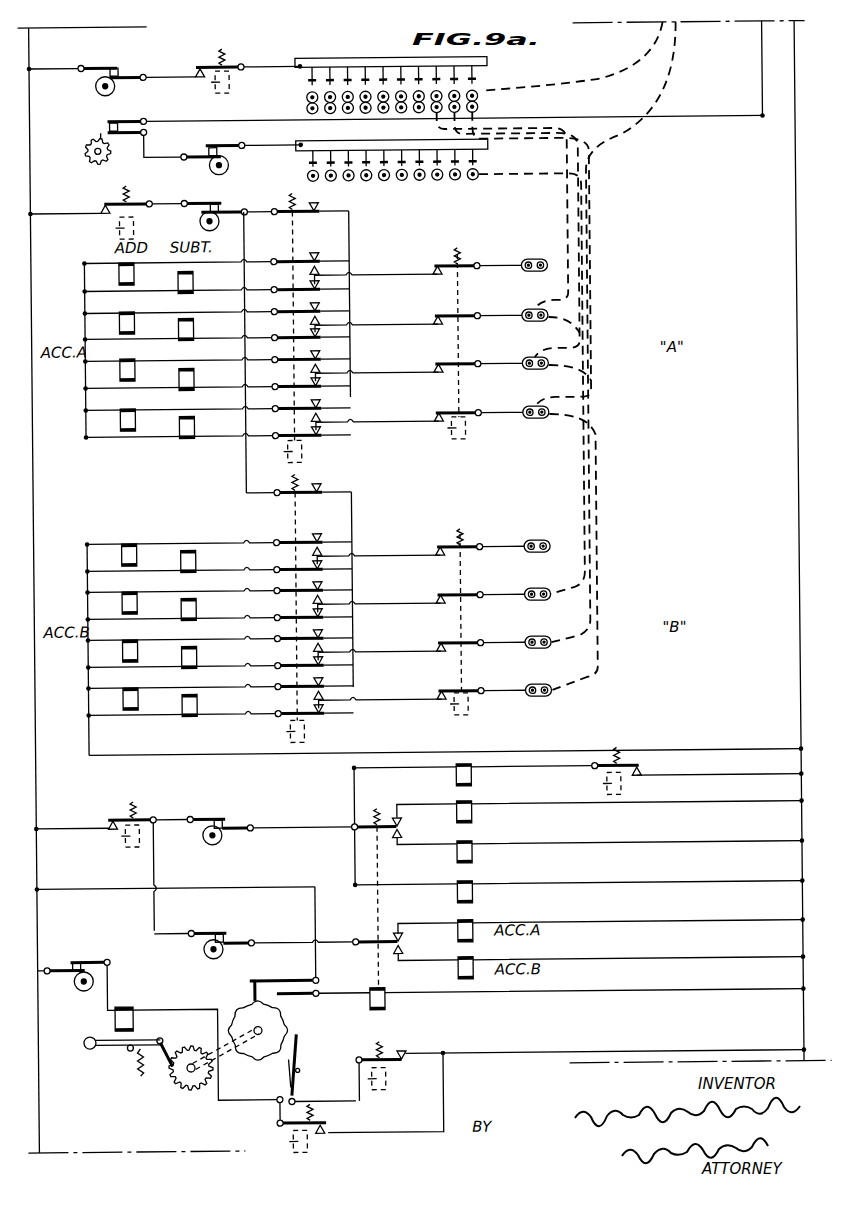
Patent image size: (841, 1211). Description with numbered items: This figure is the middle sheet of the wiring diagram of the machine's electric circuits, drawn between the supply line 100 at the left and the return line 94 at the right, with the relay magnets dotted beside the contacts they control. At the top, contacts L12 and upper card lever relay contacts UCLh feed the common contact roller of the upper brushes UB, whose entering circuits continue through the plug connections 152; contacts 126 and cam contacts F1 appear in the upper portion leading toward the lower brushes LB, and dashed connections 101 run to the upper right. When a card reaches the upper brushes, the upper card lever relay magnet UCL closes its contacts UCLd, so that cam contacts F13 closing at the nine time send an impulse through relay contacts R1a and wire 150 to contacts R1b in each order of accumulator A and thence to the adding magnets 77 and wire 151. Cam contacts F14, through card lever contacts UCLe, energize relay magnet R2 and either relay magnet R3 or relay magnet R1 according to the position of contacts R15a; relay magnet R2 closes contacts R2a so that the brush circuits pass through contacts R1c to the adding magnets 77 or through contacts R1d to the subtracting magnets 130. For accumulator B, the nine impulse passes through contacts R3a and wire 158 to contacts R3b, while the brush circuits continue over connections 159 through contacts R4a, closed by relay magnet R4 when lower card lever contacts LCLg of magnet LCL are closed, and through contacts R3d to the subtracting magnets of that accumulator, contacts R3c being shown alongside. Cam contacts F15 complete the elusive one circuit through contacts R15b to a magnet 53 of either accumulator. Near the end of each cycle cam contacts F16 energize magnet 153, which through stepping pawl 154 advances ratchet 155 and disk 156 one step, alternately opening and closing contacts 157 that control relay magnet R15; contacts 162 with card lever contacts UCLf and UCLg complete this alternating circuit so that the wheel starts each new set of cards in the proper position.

The line 100 is at (31, 52).
The line 94 is at (793, 62).
The contacts L12 is at (118, 67).
The card lever relay magnet contacts UCLh is at (198, 72).
The upper card lever relay magnet UCL is at (212, 84).
The upper brushes UB is at (380, 73).
The cable connections 101 is at (660, 92).
The cam operated contact 126 is at (106, 126).
The contact F1 is at (224, 146).
The lower brushes LB is at (380, 156).
The upper card lever relay contacts UCLd is at (100, 210).
The cam contacts F13 is at (222, 205).
The relay contacts R1a is at (318, 212).
The wire 150 is at (349, 240).
The relay contacts R1b is at (362, 410).
The contacts R1c is at (322, 276).
The contacts R1d is at (310, 286).
The adding magnets 77 is at (116, 327).
The subtracting magnets 130 is at (180, 430).
The contacts R2a is at (433, 418).
The relay magnet R2 is at (450, 438).
The relay magnet R1 is at (283, 452).
The plug connection 152 is at (590, 236).
The connections 159 is at (594, 488).
The contacts R3a is at (318, 493).
The wire 158 is at (349, 548).
The contacts R3b is at (310, 541).
The relay R3 contacts c R3c is at (322, 553).
The contacts R3d is at (318, 567).
The contacts R4a is at (433, 690).
The relay magnet R4 is at (470, 704).
The relay magnet R3 is at (283, 735).
The wire 151 is at (637, 756).
The lower card lever magnet LCL is at (600, 786).
The contacts LCLg is at (634, 780).
The contacts R15a is at (395, 822).
The contacts R15b is at (395, 938).
The magnet 53 is at (450, 975).
The relay magnet R15 is at (377, 1003).
The contacts 157 is at (300, 980).
The card lever contacts UCLe is at (102, 825).
The cam contacts F14 is at (222, 820).
The cam contacts F15 is at (222, 935).
The cam contacts F16 is at (70, 963).
The magnet 153 is at (134, 1012).
The stepping pawl 154 is at (115, 1050).
The ratchet 155 is at (182, 1048).
The disk 156 is at (236, 1012).
The contacts 162 is at (300, 1078).
The card lever relay contacts UCLf is at (398, 1056).
The card lever contacts UCLg is at (322, 1133).